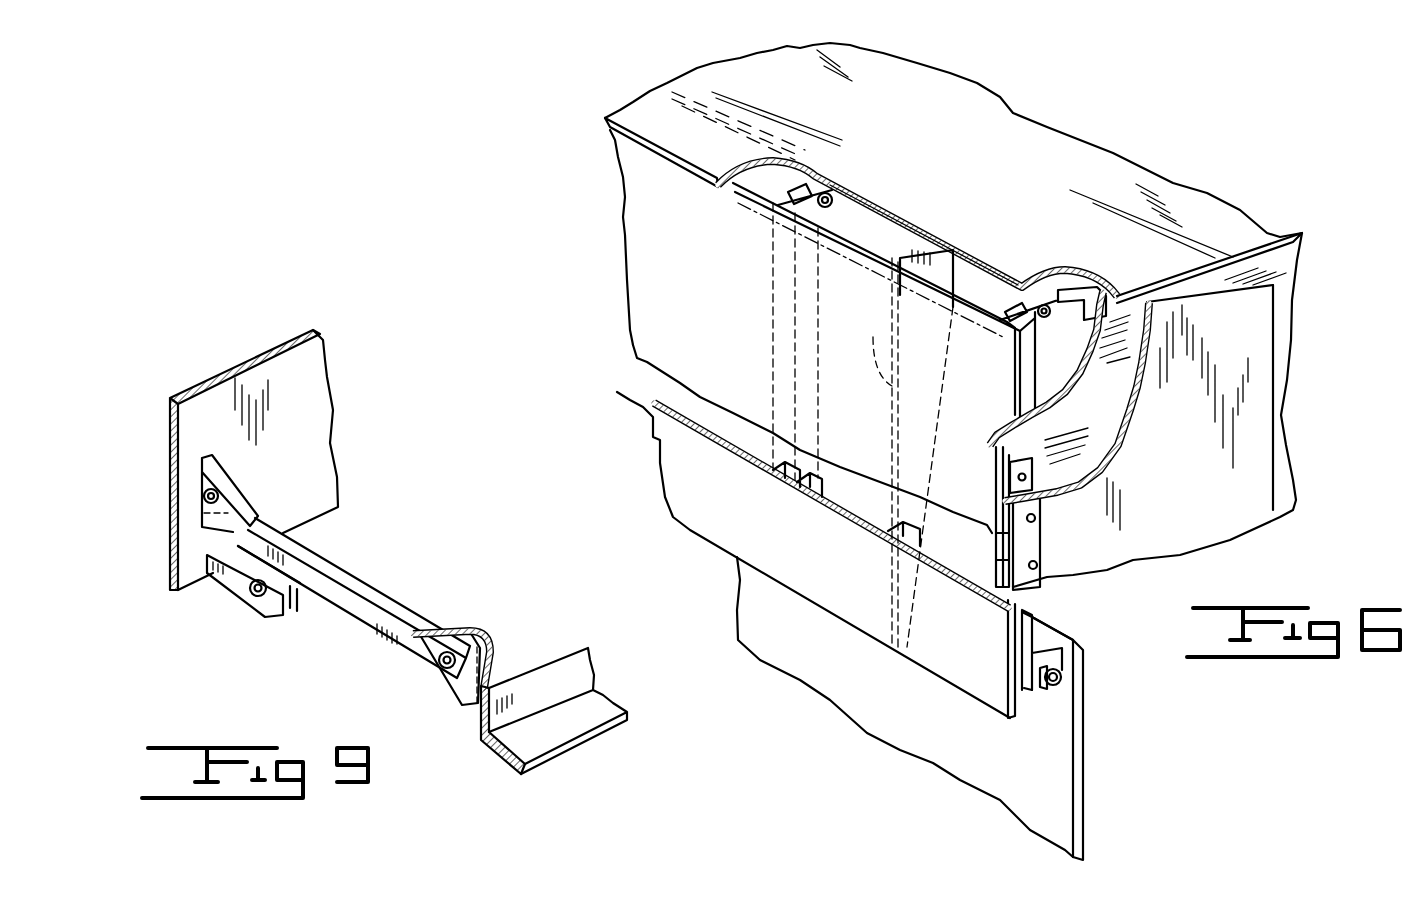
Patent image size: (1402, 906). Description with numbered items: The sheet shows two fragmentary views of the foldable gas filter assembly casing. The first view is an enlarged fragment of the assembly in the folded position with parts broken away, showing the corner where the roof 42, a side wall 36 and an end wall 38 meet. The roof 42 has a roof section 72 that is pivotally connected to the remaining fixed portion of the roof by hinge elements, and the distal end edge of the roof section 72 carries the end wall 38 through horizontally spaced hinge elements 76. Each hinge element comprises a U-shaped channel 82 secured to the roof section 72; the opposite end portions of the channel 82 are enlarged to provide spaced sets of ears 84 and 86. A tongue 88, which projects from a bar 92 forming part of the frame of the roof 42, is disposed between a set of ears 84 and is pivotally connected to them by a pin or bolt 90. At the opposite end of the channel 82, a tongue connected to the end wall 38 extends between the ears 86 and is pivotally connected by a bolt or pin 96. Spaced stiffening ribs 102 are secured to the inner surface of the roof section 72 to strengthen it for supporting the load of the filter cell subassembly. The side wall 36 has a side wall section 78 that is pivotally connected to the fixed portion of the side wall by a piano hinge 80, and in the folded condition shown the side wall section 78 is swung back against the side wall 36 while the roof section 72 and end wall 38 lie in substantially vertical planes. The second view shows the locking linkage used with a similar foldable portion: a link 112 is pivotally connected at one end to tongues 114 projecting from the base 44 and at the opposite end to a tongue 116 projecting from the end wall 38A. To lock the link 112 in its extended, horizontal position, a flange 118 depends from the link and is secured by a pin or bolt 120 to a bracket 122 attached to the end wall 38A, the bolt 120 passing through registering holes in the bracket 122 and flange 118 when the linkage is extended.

In FIG. 6, the roof 42 is at (1150, 177).
In FIG. 6, the roof section 72 is at (653, 350).
In FIG. 6, the piano hinge 80 is at (910, 527).
In FIG. 6, the end wall 38 is at (1080, 793).
In FIG. 6, the hinge element 76 is at (1082, 669).
In FIG. 6, the ears 86 is at (1037, 653).
In FIG. 6, the bolt or pin 96 is at (1064, 680).
In FIG. 6, the pin or bolt 90 is at (832, 175).
In FIG. 6, the tongue 88 is at (810, 178).
In FIG. 6, the bar 92 is at (930, 227).
In FIG. 6, the ears 84 is at (830, 205).
In FIG. 6, the U-shaped channel 82 is at (775, 265).
In FIG. 6, the stiffening rib 102 is at (937, 267).
In FIG. 6, the side wall 36 is at (1290, 330).
In FIG. 6, the side wall section 78 is at (1273, 397).
In FIG. 9, the end wall 38A is at (313, 440).
In FIG. 9, the tongue 116 is at (208, 455).
In FIG. 9, the link 112 is at (370, 597).
In FIG. 9, the flange 118 is at (250, 557).
In FIG. 9, the bracket 122 is at (230, 590).
In FIG. 9, the pin or bolt 120 is at (257, 597).
In FIG. 9, the tongues 114 is at (500, 660).
In FIG. 9, the base 44 is at (573, 743).